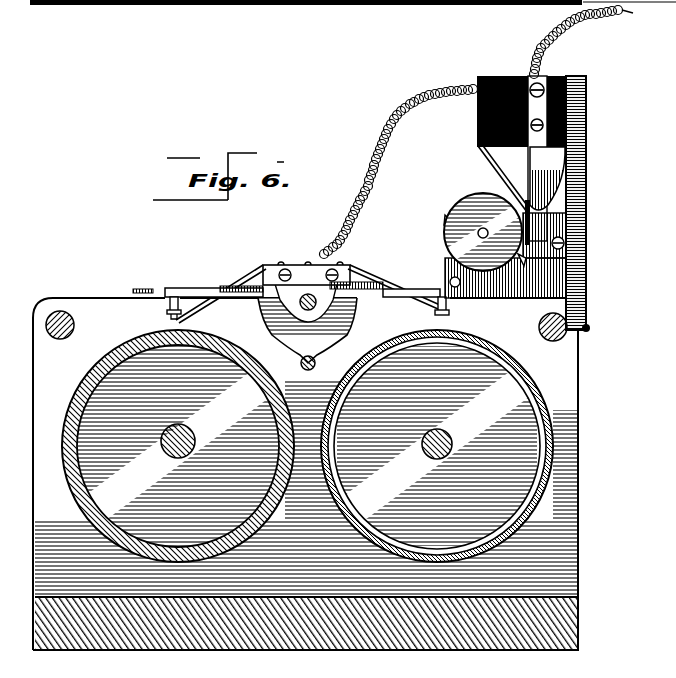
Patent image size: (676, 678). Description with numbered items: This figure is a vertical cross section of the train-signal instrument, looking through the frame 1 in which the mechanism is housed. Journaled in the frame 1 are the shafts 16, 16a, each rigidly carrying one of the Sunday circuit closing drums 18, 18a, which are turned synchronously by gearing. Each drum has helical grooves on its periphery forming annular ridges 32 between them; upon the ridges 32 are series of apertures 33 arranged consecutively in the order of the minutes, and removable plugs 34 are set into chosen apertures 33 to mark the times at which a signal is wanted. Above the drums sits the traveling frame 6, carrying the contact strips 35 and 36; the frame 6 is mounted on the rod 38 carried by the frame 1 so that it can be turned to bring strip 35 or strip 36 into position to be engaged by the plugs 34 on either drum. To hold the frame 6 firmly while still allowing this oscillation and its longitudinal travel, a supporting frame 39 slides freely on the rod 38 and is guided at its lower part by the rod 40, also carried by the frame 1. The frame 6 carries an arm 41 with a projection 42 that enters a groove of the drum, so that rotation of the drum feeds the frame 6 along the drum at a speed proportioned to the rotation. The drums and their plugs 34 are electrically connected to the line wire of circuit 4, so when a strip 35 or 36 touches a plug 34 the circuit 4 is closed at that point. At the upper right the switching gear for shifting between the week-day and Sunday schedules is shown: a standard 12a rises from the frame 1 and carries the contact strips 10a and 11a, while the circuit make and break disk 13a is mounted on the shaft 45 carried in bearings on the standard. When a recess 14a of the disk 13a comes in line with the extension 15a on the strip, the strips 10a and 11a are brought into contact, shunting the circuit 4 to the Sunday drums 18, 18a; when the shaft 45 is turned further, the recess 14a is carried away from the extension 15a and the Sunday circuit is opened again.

The frame 1 is at (585, 576).
The circuit 4 is at (584, 37).
The frame 6 is at (306, 274).
The contact strip 10a is at (529, 160).
The contact strip 11a is at (512, 170).
The standard 12a is at (578, 184).
The circuit make and break disk 13a is at (483, 232).
The recess 14a is at (446, 226).
The extension 15a is at (548, 231).
The shaft 16 is at (163, 441).
The shaft 16a is at (418, 444).
The drum 18 is at (191, 446).
The drum 18a is at (449, 446).
The annular ridge 32 is at (505, 317).
The aperture 33 is at (219, 312).
The plug 34 is at (109, 316).
The contact strip 35 is at (221, 287).
The contact strip 36 is at (394, 278).
The rod 38 is at (356, 310).
The frame 39 is at (307, 323).
The rod 40 is at (314, 366).
The arm 41 is at (201, 289).
The projection 42 is at (170, 310).
The shaft 45 is at (478, 236).